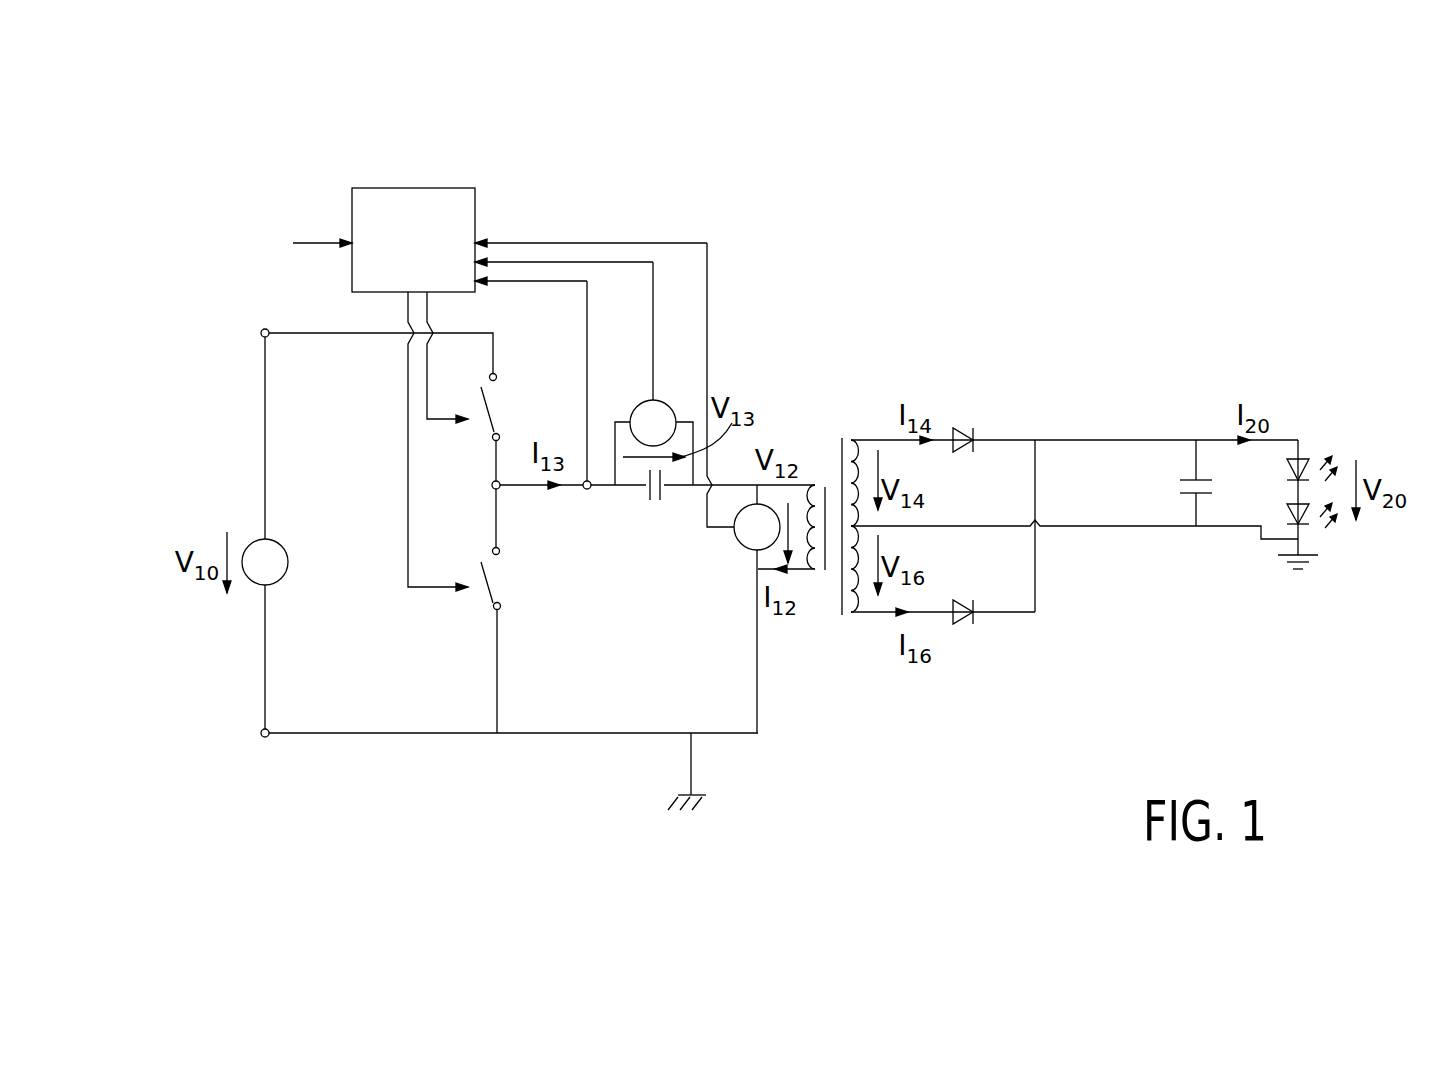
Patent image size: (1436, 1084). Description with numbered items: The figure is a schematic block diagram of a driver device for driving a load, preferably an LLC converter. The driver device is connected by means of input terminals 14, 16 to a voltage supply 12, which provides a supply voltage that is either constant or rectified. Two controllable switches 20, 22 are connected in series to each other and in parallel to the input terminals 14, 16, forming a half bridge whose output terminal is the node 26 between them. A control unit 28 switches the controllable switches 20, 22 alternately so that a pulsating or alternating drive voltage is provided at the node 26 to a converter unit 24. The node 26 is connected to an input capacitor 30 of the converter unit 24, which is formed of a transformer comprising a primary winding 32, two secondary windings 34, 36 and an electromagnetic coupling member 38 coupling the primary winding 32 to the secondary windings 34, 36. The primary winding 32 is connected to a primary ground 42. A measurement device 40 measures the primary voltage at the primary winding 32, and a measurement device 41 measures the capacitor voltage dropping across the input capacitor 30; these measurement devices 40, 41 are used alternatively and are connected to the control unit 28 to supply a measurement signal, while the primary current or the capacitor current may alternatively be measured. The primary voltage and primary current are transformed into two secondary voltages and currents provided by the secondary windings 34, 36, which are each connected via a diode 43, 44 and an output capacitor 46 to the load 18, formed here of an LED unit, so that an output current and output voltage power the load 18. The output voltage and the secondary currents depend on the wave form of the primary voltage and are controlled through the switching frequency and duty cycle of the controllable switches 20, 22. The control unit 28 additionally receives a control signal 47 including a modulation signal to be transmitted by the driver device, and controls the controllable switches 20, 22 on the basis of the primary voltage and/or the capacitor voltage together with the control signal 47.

The voltage supply 12 is at (259, 540).
The input terminal 14 is at (261, 333).
The input terminal 16 is at (262, 735).
The load 18 is at (1299, 458).
The controllable switch 20 is at (483, 398).
The controllable switch 22 is at (492, 584).
The converter unit 24 is at (827, 498).
The node 26 is at (494, 483).
The control unit 28 is at (430, 194).
The input capacitor 30 is at (649, 498).
The primary winding 32 is at (805, 484).
The secondary winding 34 is at (855, 440).
The secondary winding 36 is at (853, 612).
The electromagnetic coupling member 38 is at (825, 486).
The measurement device 40 is at (737, 536).
The measurement device 41 is at (674, 411).
The primary ground 42 is at (702, 802).
The diode 43 is at (960, 430).
The diode 44 is at (958, 626).
The output capacitor 46 is at (1180, 487).
The control signal 47 is at (312, 243).